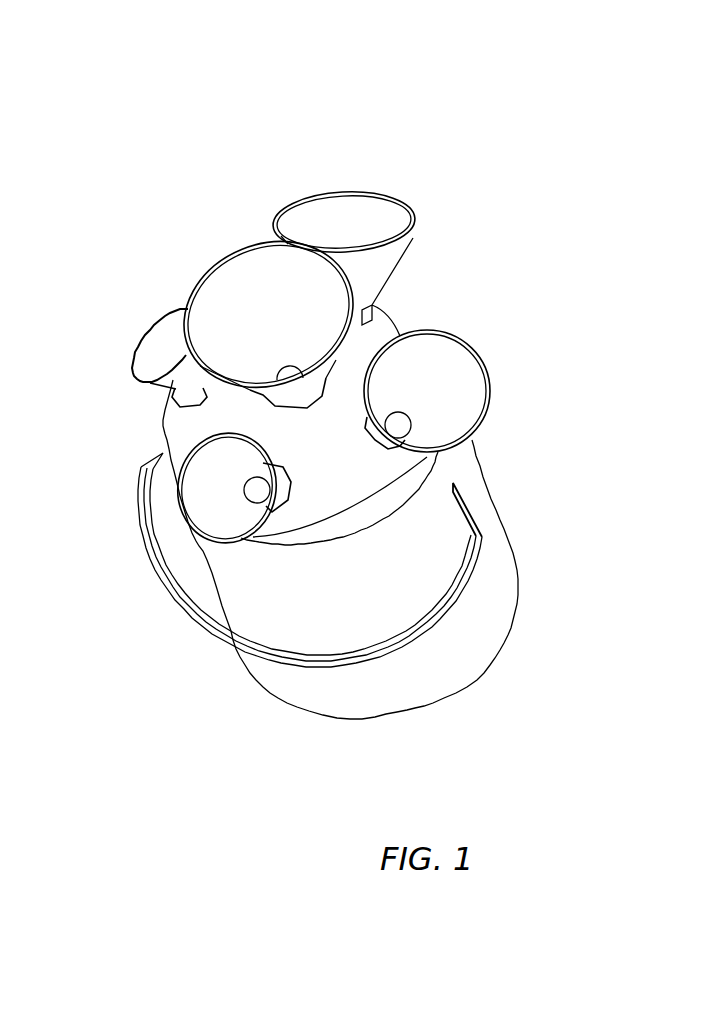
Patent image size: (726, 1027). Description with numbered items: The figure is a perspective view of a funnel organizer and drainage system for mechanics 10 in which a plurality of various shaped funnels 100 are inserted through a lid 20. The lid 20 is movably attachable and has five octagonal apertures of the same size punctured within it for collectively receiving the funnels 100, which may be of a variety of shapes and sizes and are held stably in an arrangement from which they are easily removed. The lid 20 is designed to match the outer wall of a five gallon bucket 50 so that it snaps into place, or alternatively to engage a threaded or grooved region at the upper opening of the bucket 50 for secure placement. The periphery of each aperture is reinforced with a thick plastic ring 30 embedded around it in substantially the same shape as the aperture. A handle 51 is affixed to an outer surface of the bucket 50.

The funnel organizer and drainage system for mechanics 10 is at (660, 232).
The lid 20 is at (360, 480).
The thick plastic ring 30 is at (194, 392).
The bucket 50 is at (490, 582).
The handle 51 is at (413, 623).
The funnels 100 is at (447, 398).